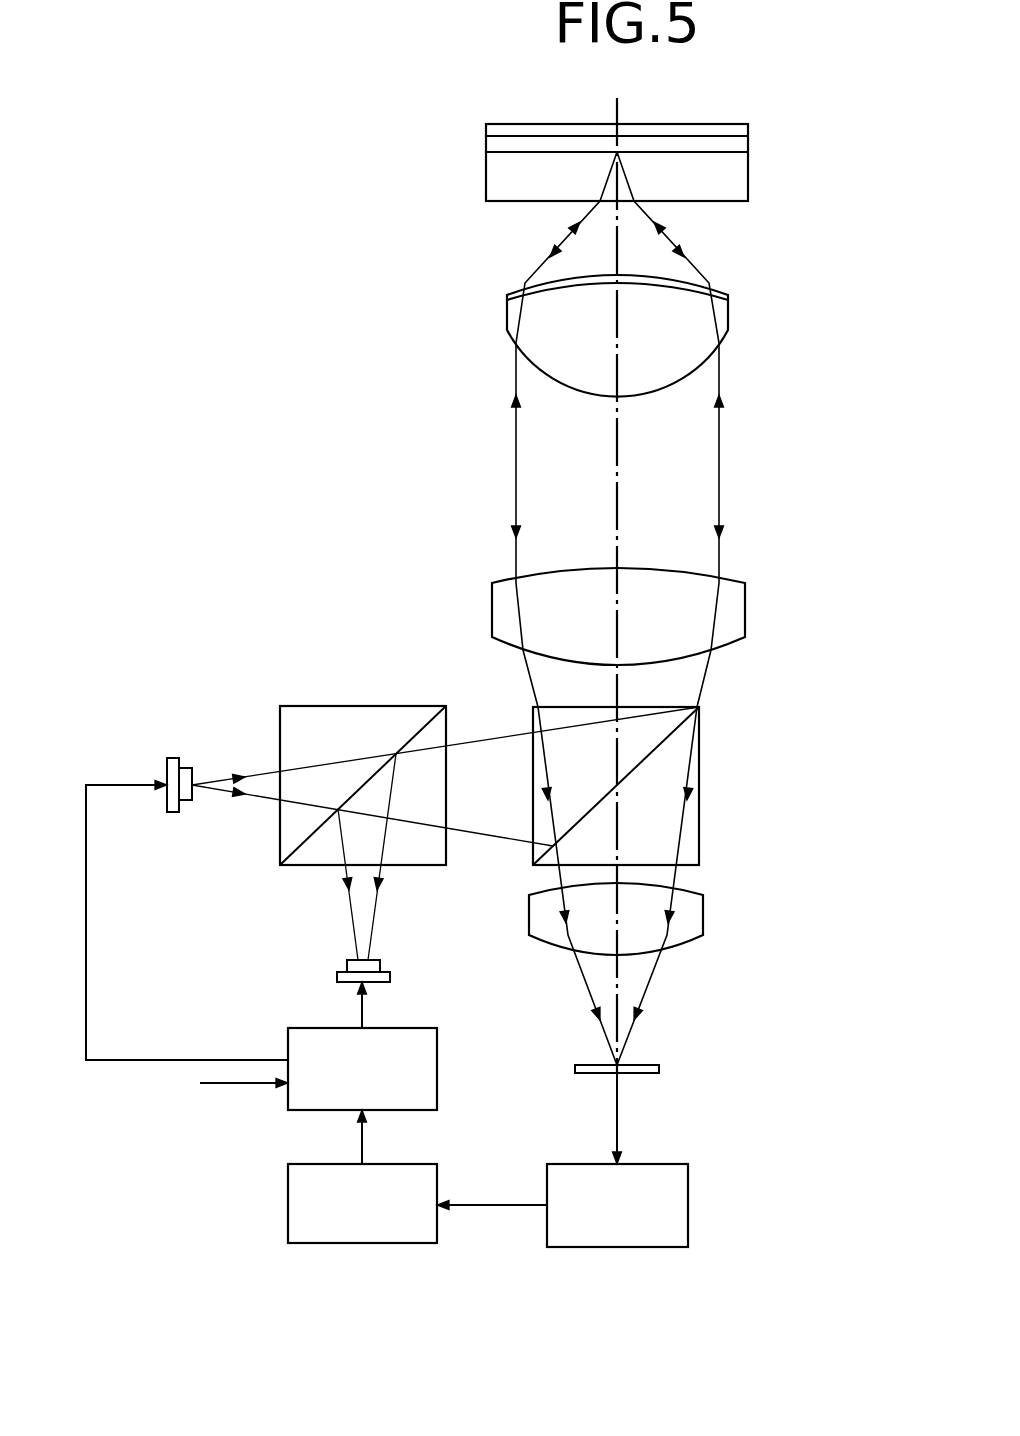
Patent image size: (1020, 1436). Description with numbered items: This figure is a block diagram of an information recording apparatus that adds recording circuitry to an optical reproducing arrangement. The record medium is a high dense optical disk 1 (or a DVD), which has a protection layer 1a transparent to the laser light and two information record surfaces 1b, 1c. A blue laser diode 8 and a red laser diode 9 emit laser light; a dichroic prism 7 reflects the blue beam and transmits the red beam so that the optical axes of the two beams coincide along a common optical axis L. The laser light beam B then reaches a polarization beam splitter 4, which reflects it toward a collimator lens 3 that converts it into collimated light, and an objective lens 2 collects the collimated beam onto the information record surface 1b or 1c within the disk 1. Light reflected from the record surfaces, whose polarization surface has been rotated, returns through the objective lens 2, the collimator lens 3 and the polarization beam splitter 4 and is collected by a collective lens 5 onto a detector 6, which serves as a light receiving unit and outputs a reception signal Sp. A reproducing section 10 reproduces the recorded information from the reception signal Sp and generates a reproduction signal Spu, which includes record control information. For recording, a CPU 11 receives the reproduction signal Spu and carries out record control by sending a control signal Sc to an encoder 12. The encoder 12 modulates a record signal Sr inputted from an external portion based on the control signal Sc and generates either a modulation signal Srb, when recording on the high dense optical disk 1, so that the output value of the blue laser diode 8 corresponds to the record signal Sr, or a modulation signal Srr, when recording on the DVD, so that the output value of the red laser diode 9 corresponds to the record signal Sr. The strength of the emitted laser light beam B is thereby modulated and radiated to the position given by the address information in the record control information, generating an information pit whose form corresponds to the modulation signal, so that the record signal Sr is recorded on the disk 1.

The high dense optical disk 1 is at (737, 181).
The protection layer 1a is at (497, 180).
The information record surface 1b is at (735, 150).
The information record surface 1c is at (497, 136).
The objective lens 2 is at (728, 318).
The collimator lens 3 is at (745, 615).
The polarization beam splitter 4 is at (699, 752).
The collective lens 5 is at (703, 918).
The detector 6 is at (659, 1070).
The dichroic prism 7 is at (278, 705).
The blue laser diode 8 is at (337, 978).
The red laser diode 9 is at (170, 820).
The reproducing section 10 is at (688, 1208).
The CPU 11 is at (378, 1243).
The encoder 12 is at (437, 1082).
The laser light beam B is at (670, 245).
The optical axis L is at (617, 497).
The modulation signal Srr is at (86, 940).
The modulation signal Srb is at (363, 1012).
The record signal Sr is at (225, 1087).
The control signal Sc is at (401, 1137).
The reception signal Sp is at (617, 1130).
The reproduction signal Spu is at (497, 1208).